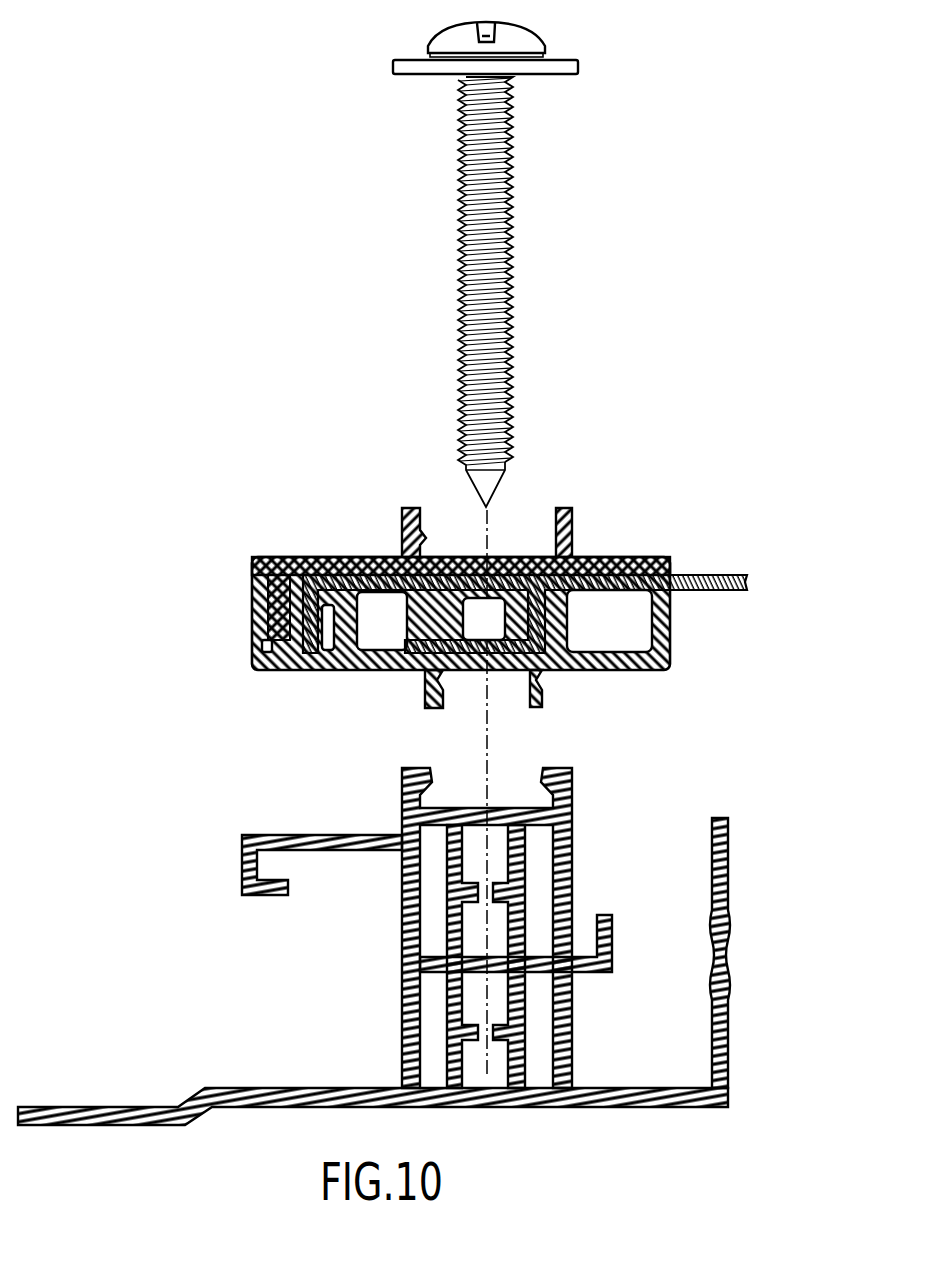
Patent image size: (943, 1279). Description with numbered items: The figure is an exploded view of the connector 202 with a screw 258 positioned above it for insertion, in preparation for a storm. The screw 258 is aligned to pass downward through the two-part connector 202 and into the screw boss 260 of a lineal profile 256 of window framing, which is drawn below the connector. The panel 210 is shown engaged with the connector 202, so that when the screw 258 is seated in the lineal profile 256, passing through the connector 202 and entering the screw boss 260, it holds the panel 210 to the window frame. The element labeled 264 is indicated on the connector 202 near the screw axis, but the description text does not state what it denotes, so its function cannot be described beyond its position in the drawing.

The connector 202 is at (435, 588).
The panel 210 is at (690, 575).
The lineal profile 256 is at (374, 924).
The screw 258 is at (464, 330).
The screw boss 260 is at (460, 790).
The clip portion 264 is at (455, 540).